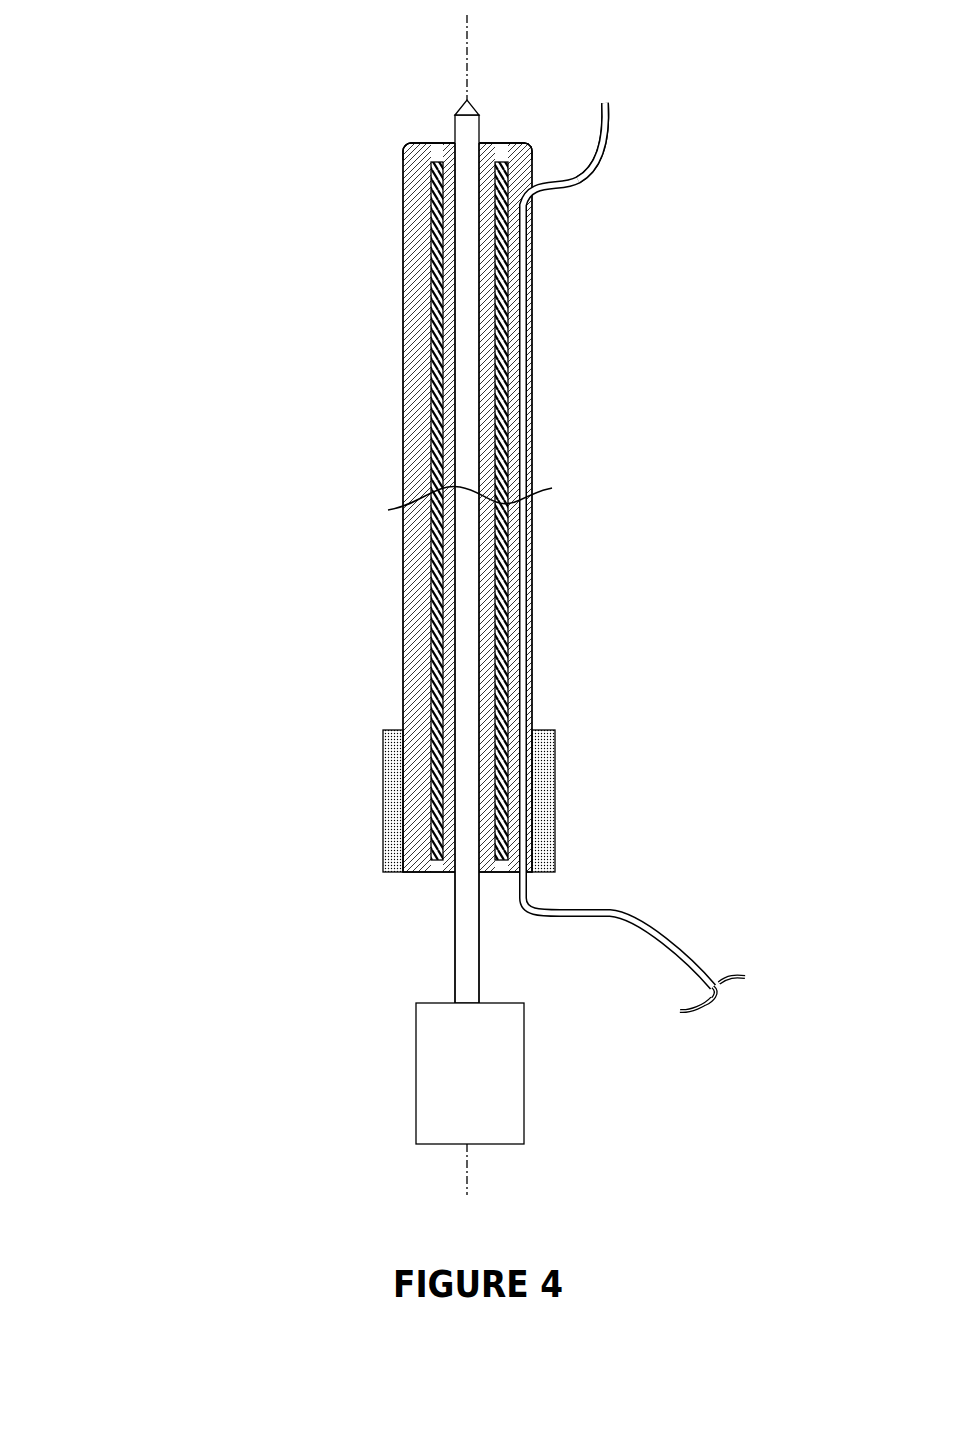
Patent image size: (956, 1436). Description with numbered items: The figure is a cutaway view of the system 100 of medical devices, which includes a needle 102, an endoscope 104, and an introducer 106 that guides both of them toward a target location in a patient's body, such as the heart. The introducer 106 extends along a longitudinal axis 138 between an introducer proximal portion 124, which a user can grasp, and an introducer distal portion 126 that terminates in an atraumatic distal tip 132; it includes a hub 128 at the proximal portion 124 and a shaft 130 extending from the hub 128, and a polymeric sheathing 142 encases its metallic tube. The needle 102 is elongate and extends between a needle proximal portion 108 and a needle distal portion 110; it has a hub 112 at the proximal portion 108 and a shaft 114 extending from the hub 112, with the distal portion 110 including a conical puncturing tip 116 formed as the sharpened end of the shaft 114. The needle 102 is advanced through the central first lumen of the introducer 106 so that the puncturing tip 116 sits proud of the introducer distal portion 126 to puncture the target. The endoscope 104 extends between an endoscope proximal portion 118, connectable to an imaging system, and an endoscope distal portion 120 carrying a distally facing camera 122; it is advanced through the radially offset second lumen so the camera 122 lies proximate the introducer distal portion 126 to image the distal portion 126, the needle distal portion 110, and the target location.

The system 100 is at (240, 262).
The needle 102 is at (455, 920).
The endoscope 104 is at (693, 960).
The introducer 106 is at (401, 615).
The needle proximal portion 108 is at (455, 893).
The needle distal portion 110 is at (472, 178).
The hub 112 is at (467, 1083).
The shaft 114 is at (467, 372).
The puncturing tip 116 is at (467, 100).
The endoscope proximal portion 118 is at (640, 918).
The endoscope distal portion 120 is at (607, 148).
The camera 122 is at (605, 103).
The introducer proximal portion 124 is at (401, 693).
The introducer distal portion 126 is at (401, 258).
The hub 128 is at (383, 797).
The shaft 130 is at (403, 435).
The distal tip 132 is at (410, 140).
The longitudinal axis 138 is at (467, 50).
The polymeric sheathing 142 is at (410, 480).